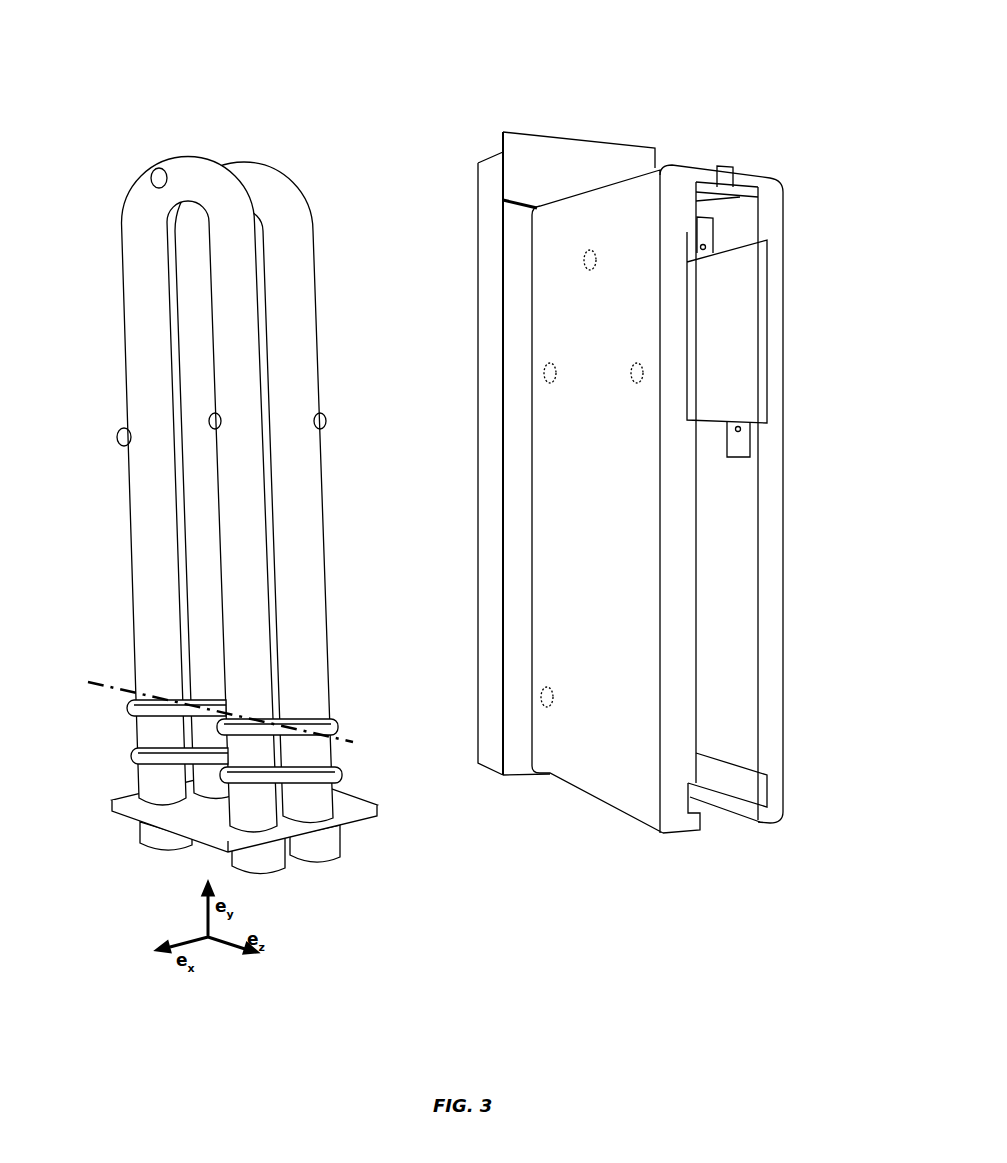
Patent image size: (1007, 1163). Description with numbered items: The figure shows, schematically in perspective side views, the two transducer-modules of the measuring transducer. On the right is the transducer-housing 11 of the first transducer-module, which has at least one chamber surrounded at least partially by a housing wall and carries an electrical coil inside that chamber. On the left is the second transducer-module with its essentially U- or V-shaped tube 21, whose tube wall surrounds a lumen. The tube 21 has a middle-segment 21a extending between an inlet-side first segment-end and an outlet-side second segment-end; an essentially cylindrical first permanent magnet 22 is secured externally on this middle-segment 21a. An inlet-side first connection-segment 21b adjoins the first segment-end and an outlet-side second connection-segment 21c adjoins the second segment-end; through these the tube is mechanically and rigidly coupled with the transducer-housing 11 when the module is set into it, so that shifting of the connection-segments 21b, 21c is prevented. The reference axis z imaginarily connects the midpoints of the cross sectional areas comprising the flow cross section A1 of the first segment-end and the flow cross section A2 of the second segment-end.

The transducer-housing 11 is at (572, 842).
The tube 21 is at (222, 480).
The middle-segment 21a is at (135, 358).
The first connection-segment 21b is at (158, 779).
The second connection-segment 21c is at (253, 814).
The first permanent magnet 22 is at (158, 172).
The flow cross section A1 is at (131, 682).
The flow cross section A2 is at (259, 714).